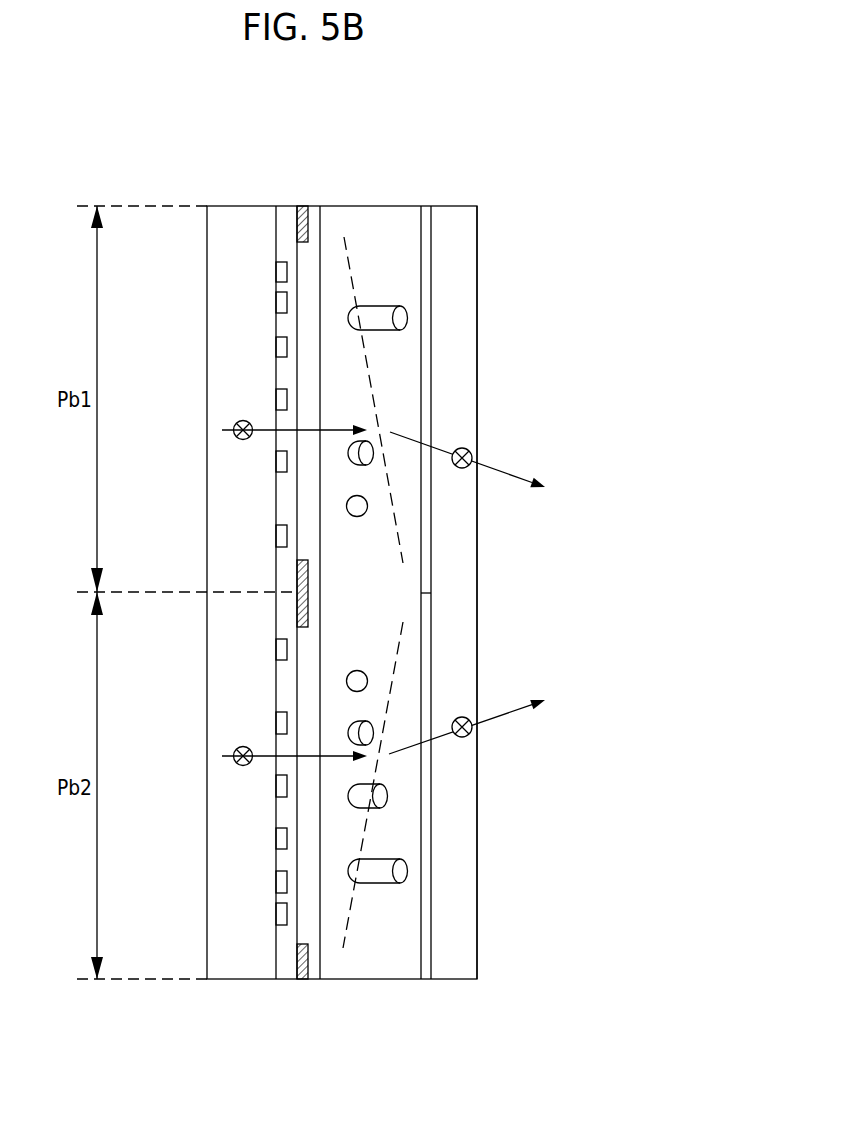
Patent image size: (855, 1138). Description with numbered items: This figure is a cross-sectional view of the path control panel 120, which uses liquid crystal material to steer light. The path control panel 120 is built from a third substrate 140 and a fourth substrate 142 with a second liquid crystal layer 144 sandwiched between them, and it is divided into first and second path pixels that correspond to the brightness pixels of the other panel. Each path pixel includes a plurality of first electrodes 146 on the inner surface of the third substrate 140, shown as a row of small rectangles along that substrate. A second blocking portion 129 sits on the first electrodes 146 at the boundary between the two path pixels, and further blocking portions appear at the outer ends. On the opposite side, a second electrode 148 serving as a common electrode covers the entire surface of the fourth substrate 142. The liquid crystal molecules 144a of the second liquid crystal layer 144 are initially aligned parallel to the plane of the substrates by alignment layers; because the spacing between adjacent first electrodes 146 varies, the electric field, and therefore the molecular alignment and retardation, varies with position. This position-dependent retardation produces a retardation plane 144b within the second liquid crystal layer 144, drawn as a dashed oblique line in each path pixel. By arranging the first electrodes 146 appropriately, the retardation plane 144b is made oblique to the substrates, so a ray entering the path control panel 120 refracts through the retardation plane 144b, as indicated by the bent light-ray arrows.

The path control panel 120 is at (368, 150).
The second blocking portion 129 is at (307, 578).
The third substrate 140 is at (236, 955).
The fourth substrate 142 is at (453, 955).
The second liquid crystal layer 144 is at (419, 979).
The liquid crystal molecules 144a is at (372, 872).
The retardation plane 144b is at (394, 668).
The first electrodes 146 is at (276, 536).
The second electrode 148 is at (427, 217).